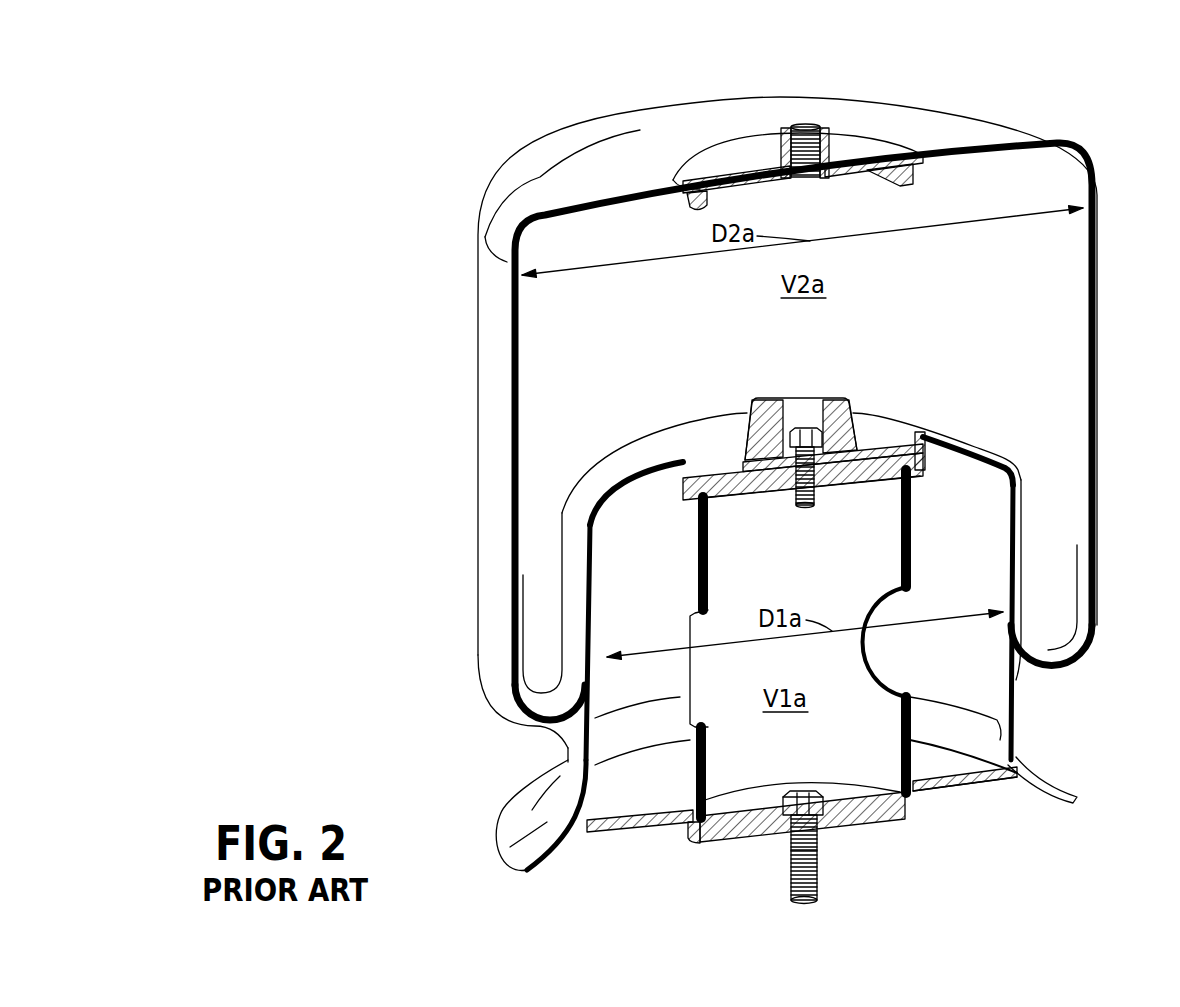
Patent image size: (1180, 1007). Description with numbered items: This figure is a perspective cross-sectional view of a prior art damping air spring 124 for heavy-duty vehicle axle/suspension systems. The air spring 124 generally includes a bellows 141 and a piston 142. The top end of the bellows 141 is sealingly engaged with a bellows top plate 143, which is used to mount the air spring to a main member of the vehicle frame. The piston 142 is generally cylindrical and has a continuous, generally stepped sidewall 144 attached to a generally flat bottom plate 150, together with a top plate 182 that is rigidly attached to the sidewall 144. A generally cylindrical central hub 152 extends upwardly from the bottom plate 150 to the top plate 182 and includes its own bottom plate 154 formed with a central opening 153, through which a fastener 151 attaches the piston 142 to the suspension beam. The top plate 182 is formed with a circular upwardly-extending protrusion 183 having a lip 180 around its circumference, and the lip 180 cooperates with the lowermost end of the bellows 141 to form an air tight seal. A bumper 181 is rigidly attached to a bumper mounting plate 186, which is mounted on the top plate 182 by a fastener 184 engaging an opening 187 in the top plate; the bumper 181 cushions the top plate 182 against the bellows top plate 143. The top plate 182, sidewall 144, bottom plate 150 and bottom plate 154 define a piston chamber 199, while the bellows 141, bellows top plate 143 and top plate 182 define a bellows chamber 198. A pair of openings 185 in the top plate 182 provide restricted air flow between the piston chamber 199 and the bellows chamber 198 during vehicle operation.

The prior art damping air spring 124 is at (496, 112).
The bellows 141 is at (1100, 212).
The piston 142 is at (991, 796).
The bellows top plate 143 is at (770, 153).
The sidewall 144 is at (1013, 758).
The bottom plate 150 is at (943, 790).
The fastener 151 is at (807, 903).
The central hub 152 is at (693, 780).
The central opening 153 is at (792, 860).
The bottom plate 154 is at (742, 838).
The lip 180 is at (677, 482).
The bumper 181 is at (822, 400).
The top plate 182 is at (713, 455).
The protrusion 183 is at (673, 441).
The fastener 184 is at (802, 506).
The openings 185 is at (743, 468).
The bumper mounting plate 186 is at (830, 450).
The opening 187 is at (793, 502).
The bellows chamber 198 is at (527, 637).
The piston chamber 199 is at (593, 797).